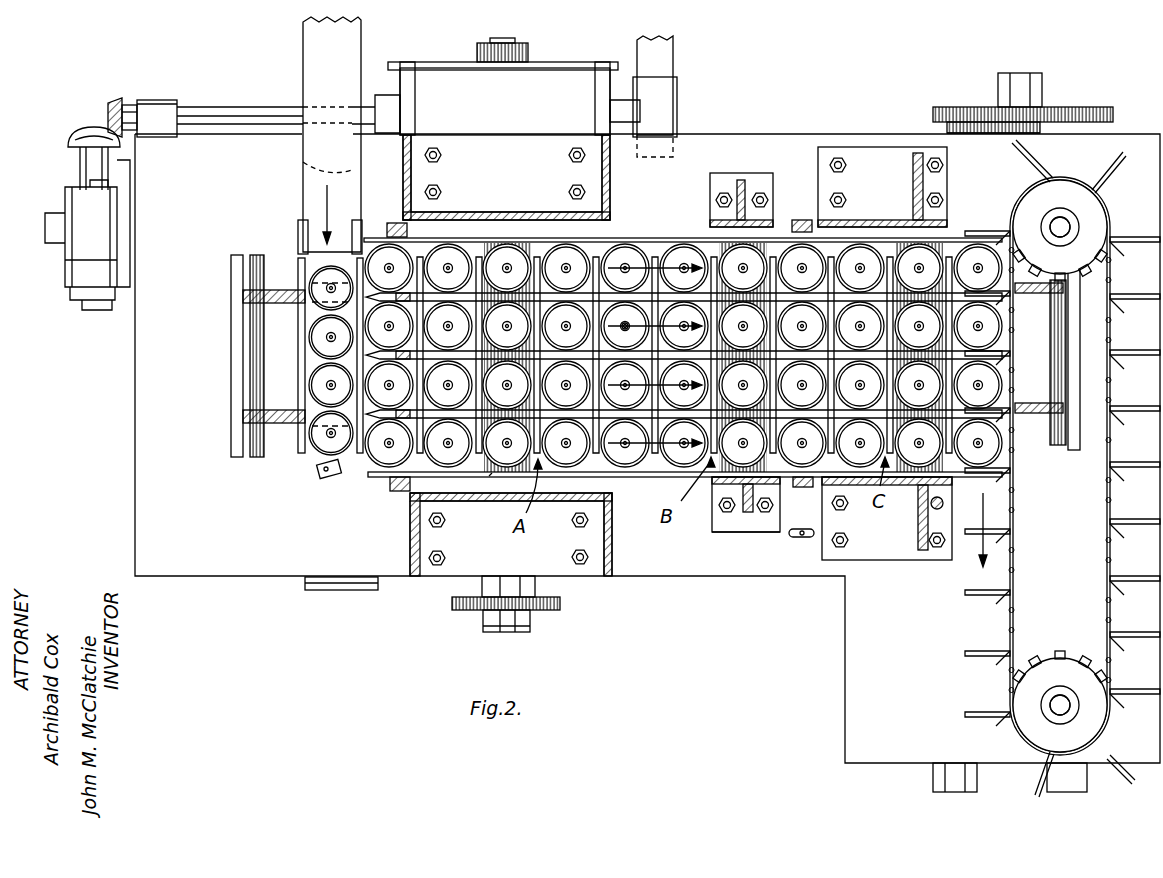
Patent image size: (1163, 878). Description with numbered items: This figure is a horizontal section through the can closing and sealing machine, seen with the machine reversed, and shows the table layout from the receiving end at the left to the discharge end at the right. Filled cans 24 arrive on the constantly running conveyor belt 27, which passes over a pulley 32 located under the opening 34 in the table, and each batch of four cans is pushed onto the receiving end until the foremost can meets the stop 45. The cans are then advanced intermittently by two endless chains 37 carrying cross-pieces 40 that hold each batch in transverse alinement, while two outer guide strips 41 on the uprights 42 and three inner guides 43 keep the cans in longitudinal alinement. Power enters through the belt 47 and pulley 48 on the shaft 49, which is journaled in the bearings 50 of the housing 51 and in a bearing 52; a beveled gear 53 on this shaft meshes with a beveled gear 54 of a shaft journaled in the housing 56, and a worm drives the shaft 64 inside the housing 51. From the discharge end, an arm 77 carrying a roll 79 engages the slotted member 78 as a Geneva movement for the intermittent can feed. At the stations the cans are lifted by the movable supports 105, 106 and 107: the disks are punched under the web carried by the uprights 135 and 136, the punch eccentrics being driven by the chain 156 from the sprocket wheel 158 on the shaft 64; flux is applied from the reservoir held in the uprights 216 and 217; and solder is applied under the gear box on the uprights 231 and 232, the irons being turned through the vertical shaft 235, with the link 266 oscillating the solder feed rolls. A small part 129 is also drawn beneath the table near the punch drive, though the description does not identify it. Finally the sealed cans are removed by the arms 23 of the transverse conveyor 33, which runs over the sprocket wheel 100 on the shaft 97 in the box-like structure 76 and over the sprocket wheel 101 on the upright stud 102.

The arms 23 is at (1128, 300).
The filled cans 24 is at (449, 254).
The conveyor belt 27 is at (340, 48).
The pulley 32 is at (300, 171).
The transversely arranged conveyor 33 is at (1014, 519).
The opening 34 is at (298, 234).
The endless chains 37 is at (245, 420).
The cross-pieces 40 is at (594, 239).
The outer guide strips 41 is at (564, 236).
The uprights 42 is at (393, 226).
The inner guides 43 is at (600, 362).
The stop 45 is at (327, 478).
The belt 47 is at (664, 59).
The pulley 48 is at (677, 87).
The shaft 49 is at (221, 117).
The bearings 50 is at (385, 107).
The housing 51 is at (547, 78).
The bearing 52 is at (166, 105).
The beveled gear 53 is at (116, 99).
The beveled gear 54 is at (70, 140).
The housing 56 is at (68, 276).
The shaft 64 is at (503, 44).
The box-like structure 76 is at (848, 674).
The arm 77 is at (969, 133).
The slotted member 78 is at (1064, 109).
The roll 79 is at (964, 114).
The shaft 97 is at (1063, 703).
The sprocket wheel 100 is at (1040, 675).
The sprocket wheel 101 is at (1063, 190).
The upright stud 102 is at (1067, 222).
The movable support 105 is at (489, 476).
The movable support 106 is at (750, 512).
The movable support 107 is at (944, 467).
The plate 129 is at (357, 591).
The upright 135 is at (611, 178).
The upright 136 is at (611, 568).
The chain 156 is at (477, 611).
The sprocket wheel 158 is at (470, 588).
The upright 216 is at (742, 190).
The upright 217 is at (718, 527).
The upright 231 is at (888, 150).
The upright 232 is at (855, 545).
The vertically arranged shaft 235 is at (930, 505).
The link 266 is at (802, 537).